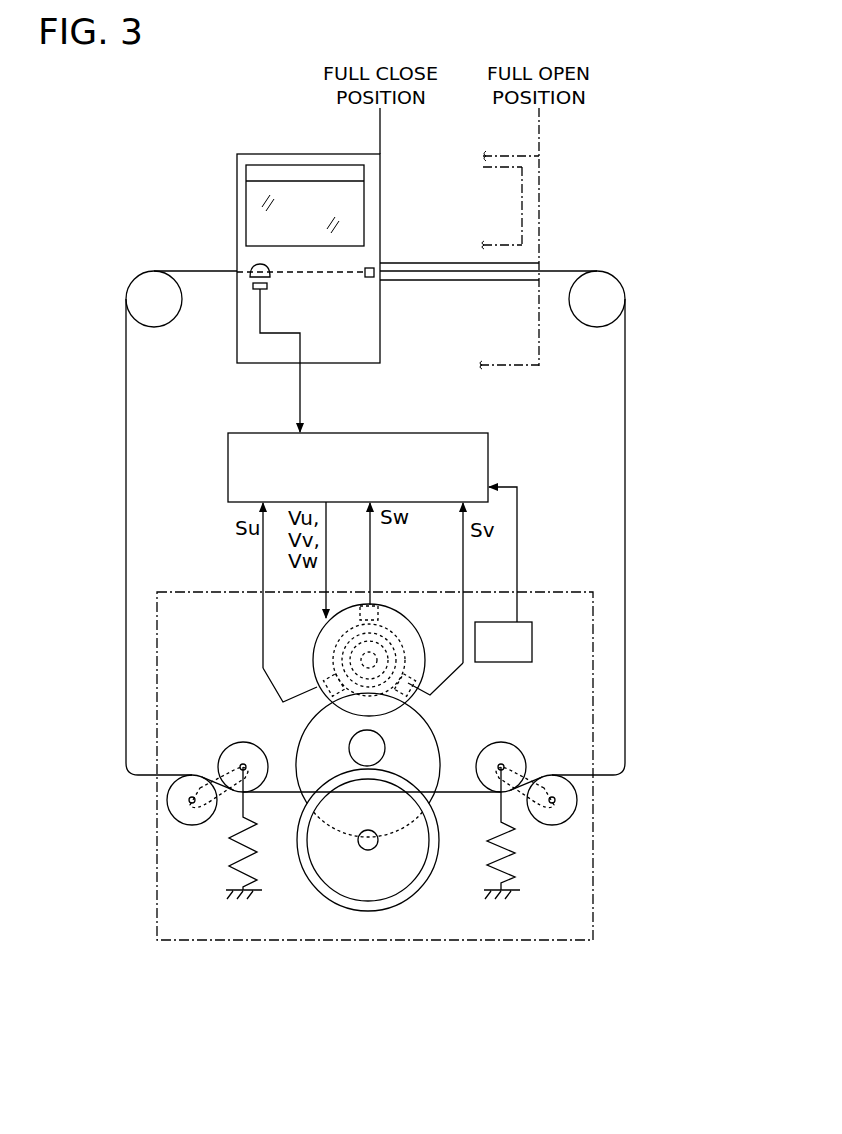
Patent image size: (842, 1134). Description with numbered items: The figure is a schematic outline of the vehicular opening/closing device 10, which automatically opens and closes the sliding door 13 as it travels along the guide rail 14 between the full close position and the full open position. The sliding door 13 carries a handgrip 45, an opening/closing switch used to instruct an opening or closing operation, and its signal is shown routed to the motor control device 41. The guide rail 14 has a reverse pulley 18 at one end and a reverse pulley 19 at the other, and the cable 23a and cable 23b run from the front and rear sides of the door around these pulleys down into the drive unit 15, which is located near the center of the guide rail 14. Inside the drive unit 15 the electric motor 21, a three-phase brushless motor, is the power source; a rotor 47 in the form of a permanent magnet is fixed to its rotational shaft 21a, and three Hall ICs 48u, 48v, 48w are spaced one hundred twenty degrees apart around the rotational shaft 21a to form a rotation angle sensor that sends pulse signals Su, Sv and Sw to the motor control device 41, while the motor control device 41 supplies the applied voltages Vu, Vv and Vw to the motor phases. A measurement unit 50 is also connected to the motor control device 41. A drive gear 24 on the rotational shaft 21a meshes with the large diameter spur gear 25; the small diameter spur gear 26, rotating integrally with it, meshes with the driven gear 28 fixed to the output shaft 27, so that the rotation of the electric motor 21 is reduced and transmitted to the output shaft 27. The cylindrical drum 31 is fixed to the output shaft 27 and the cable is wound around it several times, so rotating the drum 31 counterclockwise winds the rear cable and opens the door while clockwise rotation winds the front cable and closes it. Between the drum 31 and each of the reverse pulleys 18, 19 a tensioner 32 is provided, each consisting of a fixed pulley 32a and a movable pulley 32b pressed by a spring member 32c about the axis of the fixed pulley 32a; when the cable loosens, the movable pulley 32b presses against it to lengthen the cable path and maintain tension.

The vehicular opening/closing device 10 is at (640, 322).
The sliding door 13 is at (303, 150).
The guide rail 14 is at (543, 267).
The drive unit 15 is at (551, 590).
The reverse pulley 18 is at (154, 312).
The reverse pulley 19 is at (597, 312).
The electric motor 21 is at (333, 708).
The rotational shaft 21a is at (342, 667).
The cable 23a is at (126, 628).
The cable 23b is at (625, 476).
The drive gear 24 is at (340, 655).
The large diameter spur gear 25 is at (430, 707).
The small diameter spur gear 26 is at (385, 748).
The output shaft 27 is at (370, 851).
The driven gear 28 is at (418, 890).
The drum 31 is at (312, 880).
The tensioner 32 is at (335, 800).
The fixed pulley 32a is at (178, 812).
The movable pulley 32b is at (240, 748).
The spring member 32c is at (232, 870).
The motor control device 41 is at (491, 464).
The handgrip 45 is at (253, 286).
The rotor 47 is at (335, 640).
The Hall IC 48u is at (330, 690).
The Hall IC 48v is at (412, 675).
The Hall IC 48w is at (362, 605).
The measurement unit 50 is at (533, 640).